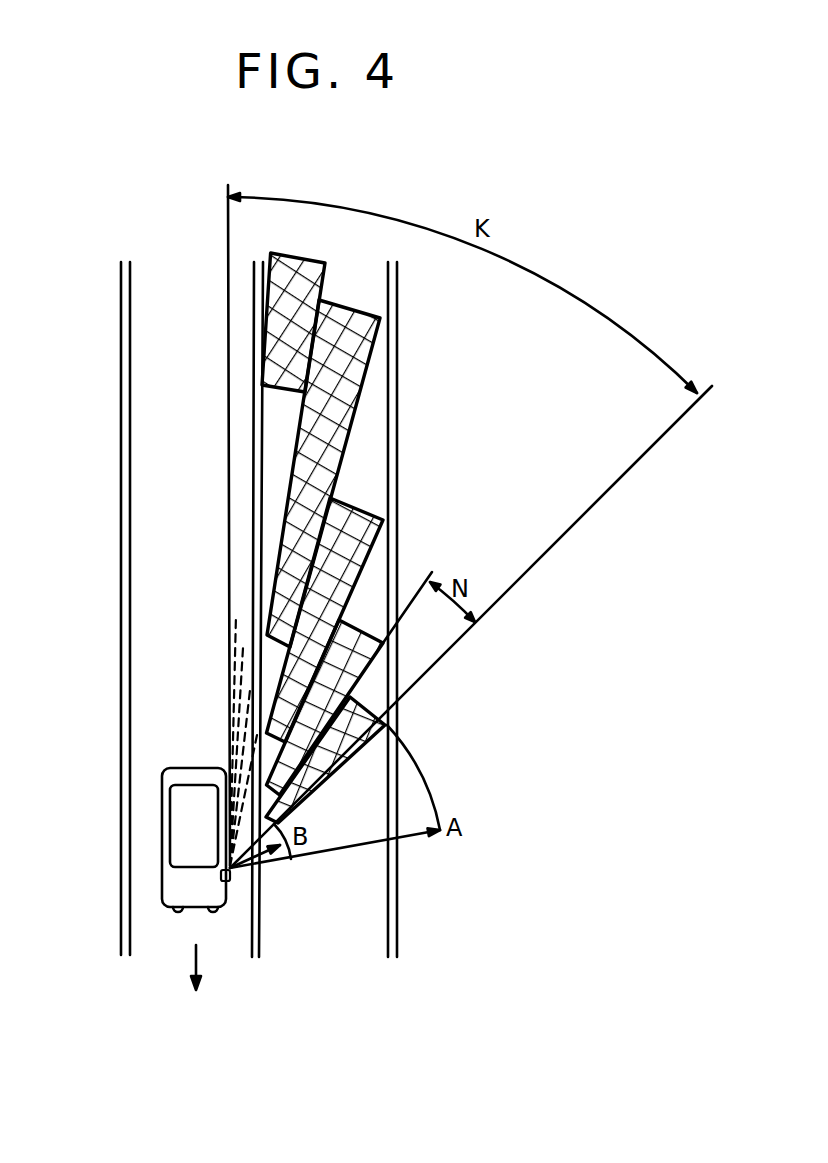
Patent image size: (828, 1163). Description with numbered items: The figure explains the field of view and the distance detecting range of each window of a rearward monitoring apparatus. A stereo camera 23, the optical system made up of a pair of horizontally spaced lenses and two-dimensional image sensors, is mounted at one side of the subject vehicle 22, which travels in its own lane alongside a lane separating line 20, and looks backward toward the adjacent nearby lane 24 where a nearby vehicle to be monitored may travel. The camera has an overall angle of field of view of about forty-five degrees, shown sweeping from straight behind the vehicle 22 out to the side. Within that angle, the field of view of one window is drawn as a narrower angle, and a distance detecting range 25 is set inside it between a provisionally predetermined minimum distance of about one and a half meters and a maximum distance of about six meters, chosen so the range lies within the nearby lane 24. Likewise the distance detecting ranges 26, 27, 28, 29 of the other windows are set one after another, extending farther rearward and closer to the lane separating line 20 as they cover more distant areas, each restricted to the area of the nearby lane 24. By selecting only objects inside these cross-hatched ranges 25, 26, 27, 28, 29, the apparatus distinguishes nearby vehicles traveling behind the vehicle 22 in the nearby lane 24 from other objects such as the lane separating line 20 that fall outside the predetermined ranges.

The lane separating line 20 is at (260, 927).
The vehicle 22 is at (162, 838).
The stereo camera 23 is at (229, 883).
The nearby lane 24 is at (372, 920).
The distance detecting range 25 is at (335, 750).
The distance detecting range 26 is at (360, 605).
The distance detecting range 27 is at (360, 520).
The distance detecting range 28 is at (343, 360).
The distance detecting range 29 is at (295, 262).